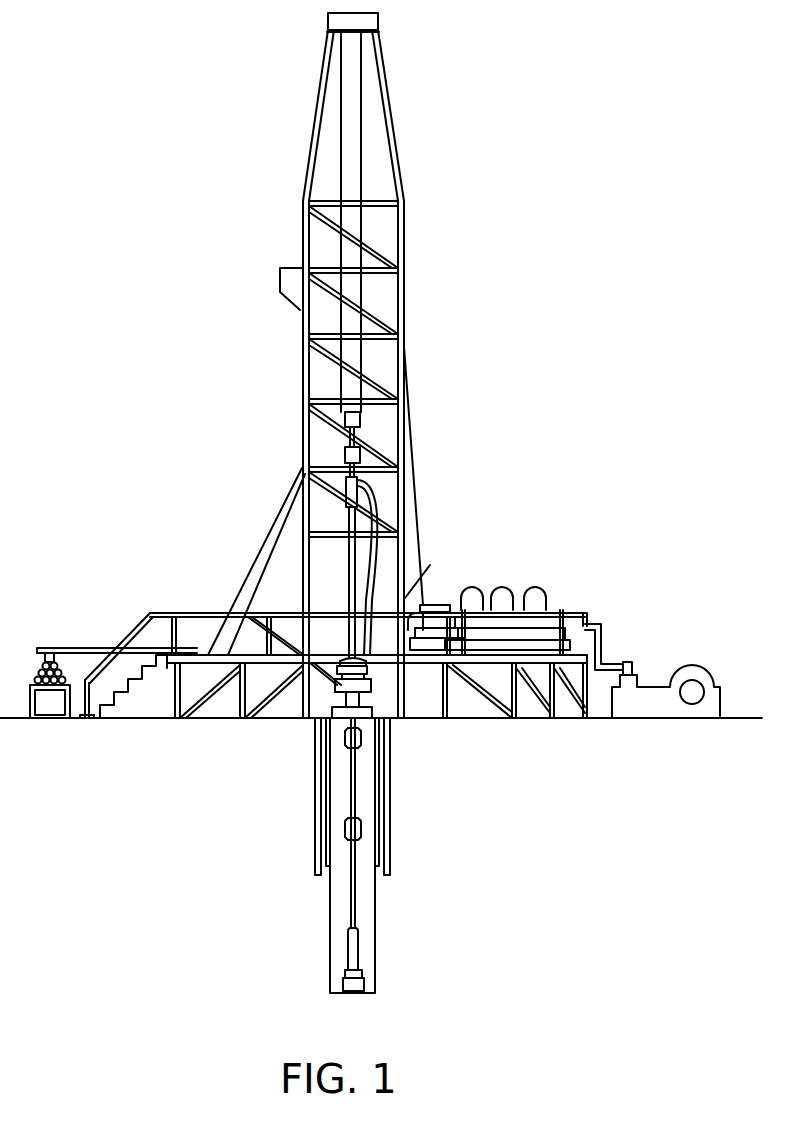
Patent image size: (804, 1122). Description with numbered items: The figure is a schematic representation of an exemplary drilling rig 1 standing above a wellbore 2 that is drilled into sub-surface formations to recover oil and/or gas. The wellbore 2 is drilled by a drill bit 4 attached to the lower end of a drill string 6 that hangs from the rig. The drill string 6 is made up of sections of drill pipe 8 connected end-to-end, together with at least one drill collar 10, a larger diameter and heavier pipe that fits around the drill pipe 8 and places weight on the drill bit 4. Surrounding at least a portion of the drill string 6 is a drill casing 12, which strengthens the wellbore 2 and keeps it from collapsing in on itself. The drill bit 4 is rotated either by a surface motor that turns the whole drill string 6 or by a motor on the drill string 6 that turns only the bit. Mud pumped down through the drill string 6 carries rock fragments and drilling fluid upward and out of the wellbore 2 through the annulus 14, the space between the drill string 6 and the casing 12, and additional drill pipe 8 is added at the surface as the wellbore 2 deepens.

The drilling rig 1 is at (184, 286).
The wellbore 2 is at (343, 910).
The drill bit 4 is at (358, 985).
The drill string 6 is at (370, 896).
The drill pipe 8 is at (357, 787).
The drill collar 10 is at (357, 953).
The drill casing 12 is at (315, 810).
The annulus 14 is at (365, 852).